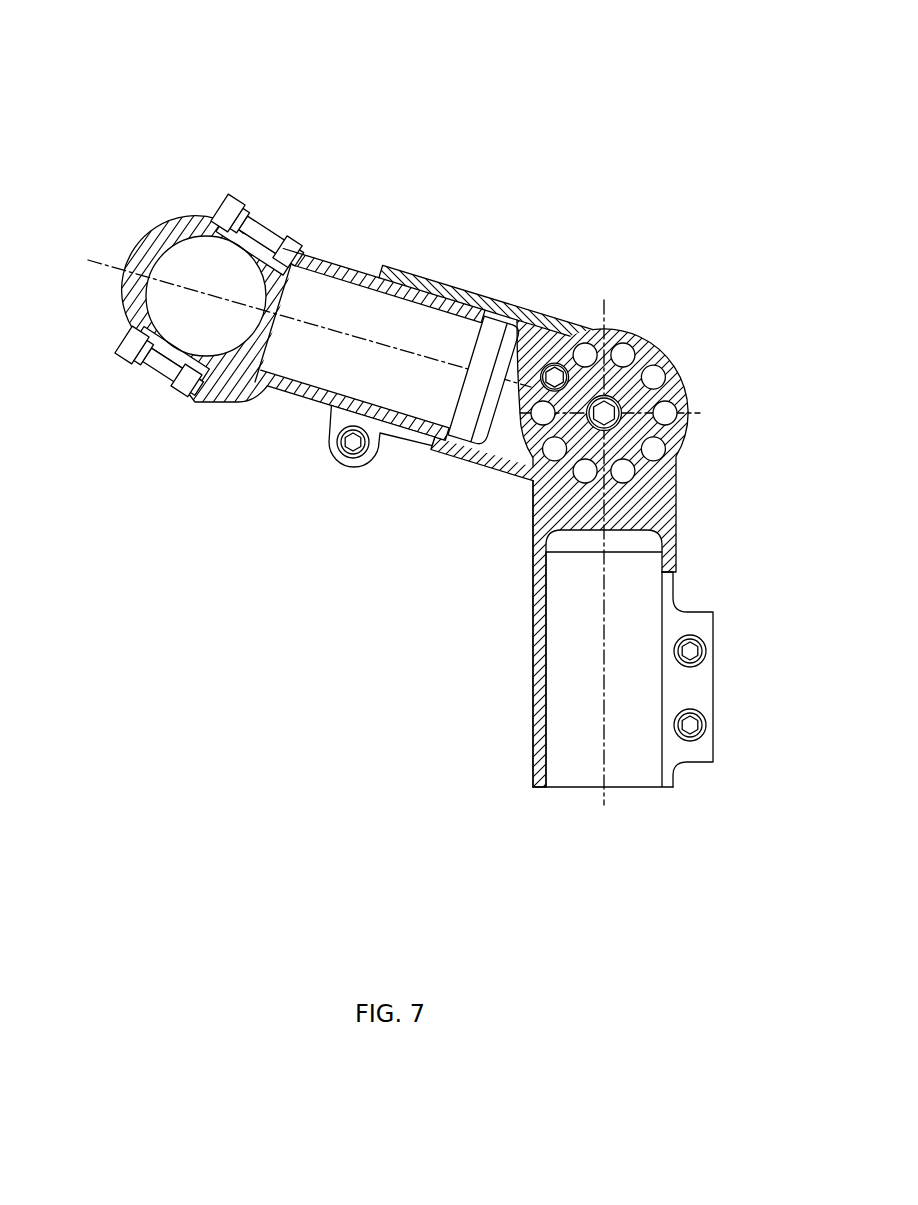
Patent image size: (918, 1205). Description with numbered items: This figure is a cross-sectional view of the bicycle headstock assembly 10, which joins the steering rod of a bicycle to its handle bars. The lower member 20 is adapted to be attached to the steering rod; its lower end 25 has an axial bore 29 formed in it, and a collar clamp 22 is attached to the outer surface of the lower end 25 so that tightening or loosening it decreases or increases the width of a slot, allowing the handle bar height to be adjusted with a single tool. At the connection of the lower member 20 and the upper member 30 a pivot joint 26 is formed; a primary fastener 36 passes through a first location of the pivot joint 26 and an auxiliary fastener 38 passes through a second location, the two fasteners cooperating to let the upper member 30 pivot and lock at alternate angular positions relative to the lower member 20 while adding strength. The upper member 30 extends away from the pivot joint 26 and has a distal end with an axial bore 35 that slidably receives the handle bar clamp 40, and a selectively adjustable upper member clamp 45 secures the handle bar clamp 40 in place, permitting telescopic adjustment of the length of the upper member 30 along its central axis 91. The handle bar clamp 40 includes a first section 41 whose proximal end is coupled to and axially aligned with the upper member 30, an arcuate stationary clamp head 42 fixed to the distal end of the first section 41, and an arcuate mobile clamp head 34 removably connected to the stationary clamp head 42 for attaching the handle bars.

The bicycle headstock assembly 10 is at (481, 86).
The lower member 20 is at (613, 522).
The collar clamp 22 is at (719, 677).
The lower end 25 is at (540, 735).
The pivot joint 26 is at (694, 364).
The axial bore 29 is at (622, 669).
The upper member 30 is at (456, 258).
The arcuate mobile clamp head 34 is at (156, 238).
The axial bore 35 is at (480, 400).
The primary fastener 36 is at (610, 416).
The auxiliary fastener 38 is at (555, 375).
The handle bar clamp 40 is at (209, 309).
The first section 41 is at (357, 275).
The arcuate stationary clamp head 42 is at (238, 400).
The upper member clamp 45 is at (353, 467).
The central axis 91 is at (115, 282).